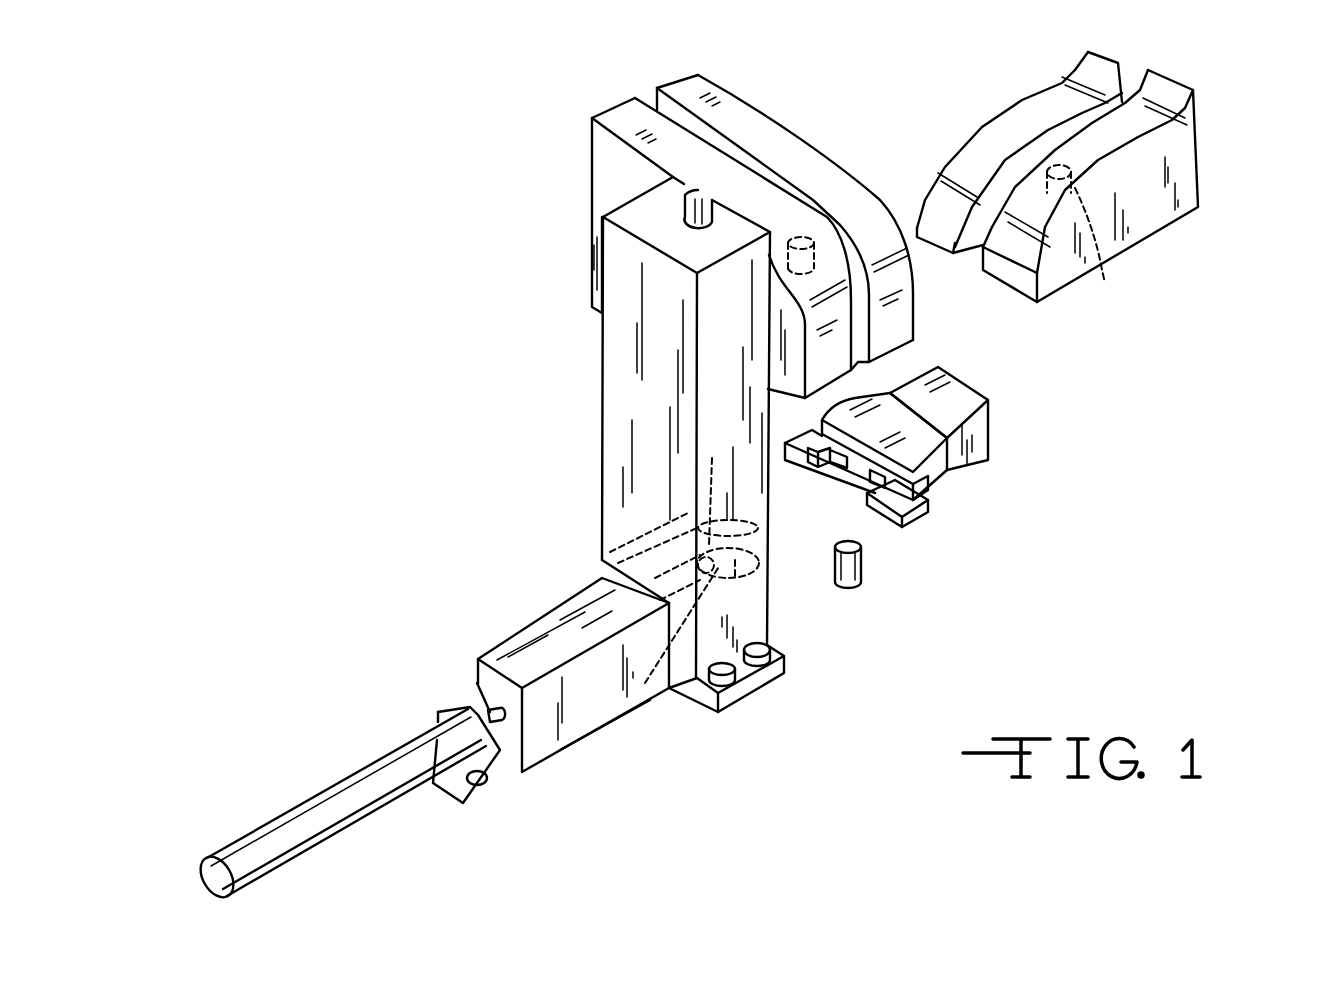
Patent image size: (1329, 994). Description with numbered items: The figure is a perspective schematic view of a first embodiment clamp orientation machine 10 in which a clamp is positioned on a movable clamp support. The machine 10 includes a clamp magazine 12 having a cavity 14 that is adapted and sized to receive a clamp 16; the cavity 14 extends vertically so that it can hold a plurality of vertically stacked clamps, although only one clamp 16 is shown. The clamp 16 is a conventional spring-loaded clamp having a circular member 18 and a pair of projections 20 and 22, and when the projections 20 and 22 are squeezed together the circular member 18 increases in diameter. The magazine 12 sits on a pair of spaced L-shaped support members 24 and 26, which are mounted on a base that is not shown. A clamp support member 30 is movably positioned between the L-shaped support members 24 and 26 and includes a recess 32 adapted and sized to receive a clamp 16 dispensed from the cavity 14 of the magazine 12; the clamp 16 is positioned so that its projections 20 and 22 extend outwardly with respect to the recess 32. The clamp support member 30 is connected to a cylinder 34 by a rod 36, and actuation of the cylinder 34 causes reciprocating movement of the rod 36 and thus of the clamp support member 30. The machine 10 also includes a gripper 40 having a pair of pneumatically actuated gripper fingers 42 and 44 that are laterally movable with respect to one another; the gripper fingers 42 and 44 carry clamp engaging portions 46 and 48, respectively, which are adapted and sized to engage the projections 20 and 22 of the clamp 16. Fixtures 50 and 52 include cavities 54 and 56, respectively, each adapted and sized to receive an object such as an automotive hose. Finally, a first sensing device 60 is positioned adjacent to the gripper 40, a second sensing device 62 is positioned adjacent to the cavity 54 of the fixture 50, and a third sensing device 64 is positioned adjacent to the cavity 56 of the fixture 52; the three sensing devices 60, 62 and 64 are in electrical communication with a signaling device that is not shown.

The clamp orientation machine 10 is at (372, 246).
The clamp magazine 12 is at (601, 412).
The cavity 14 is at (684, 214).
The clamp 16 is at (773, 583).
The circular member 18 is at (718, 483).
The projection 20 is at (772, 528).
The projection 22 is at (772, 563).
The L-shaped support member 24 is at (600, 574).
The L-shaped support member 26 is at (718, 715).
The clamp support member 30 is at (542, 748).
The recess 32 is at (637, 722).
The cylinder 34 is at (296, 806).
The rod 36 is at (477, 673).
The gripper 40 is at (948, 496).
The gripper finger 42 is at (808, 442).
The gripper finger 44 is at (903, 528).
The clamp engaging portion 46 is at (828, 463).
The clamp engaging portion 48 is at (870, 485).
The fixture 50 is at (735, 88).
The fixture 52 is at (1196, 100).
The cavity 54 is at (738, 158).
The cavity 56 is at (1092, 130).
The first sensing device 60 is at (856, 593).
The second sensing device 62 is at (815, 230).
The third sensing device 64 is at (1105, 283).